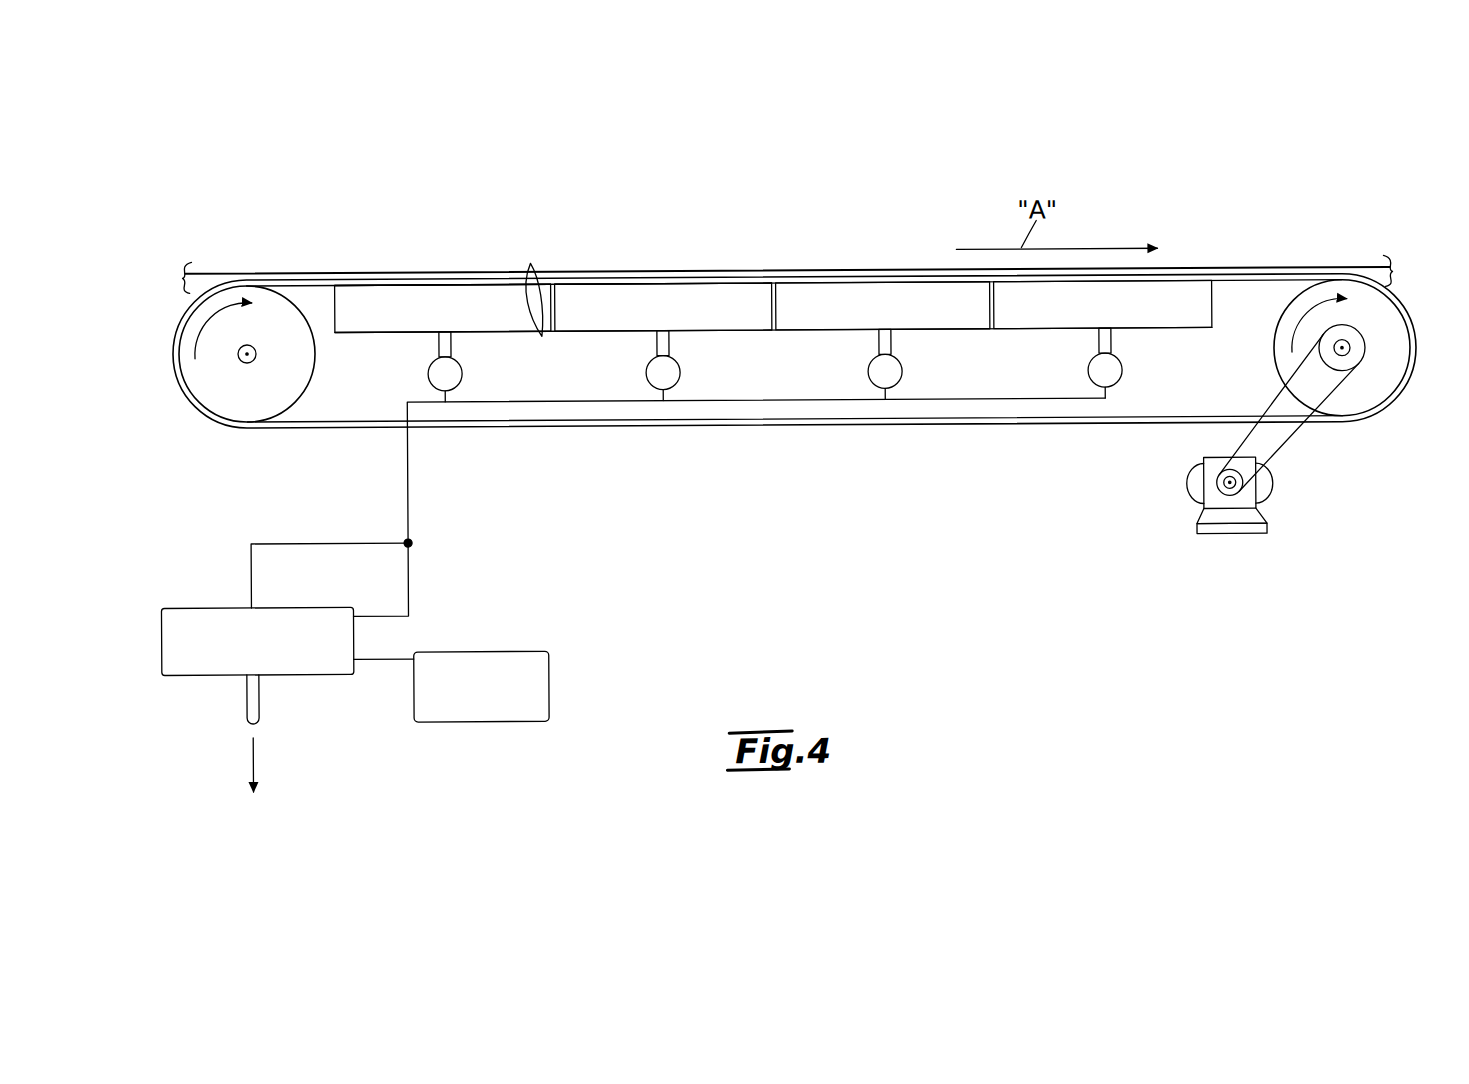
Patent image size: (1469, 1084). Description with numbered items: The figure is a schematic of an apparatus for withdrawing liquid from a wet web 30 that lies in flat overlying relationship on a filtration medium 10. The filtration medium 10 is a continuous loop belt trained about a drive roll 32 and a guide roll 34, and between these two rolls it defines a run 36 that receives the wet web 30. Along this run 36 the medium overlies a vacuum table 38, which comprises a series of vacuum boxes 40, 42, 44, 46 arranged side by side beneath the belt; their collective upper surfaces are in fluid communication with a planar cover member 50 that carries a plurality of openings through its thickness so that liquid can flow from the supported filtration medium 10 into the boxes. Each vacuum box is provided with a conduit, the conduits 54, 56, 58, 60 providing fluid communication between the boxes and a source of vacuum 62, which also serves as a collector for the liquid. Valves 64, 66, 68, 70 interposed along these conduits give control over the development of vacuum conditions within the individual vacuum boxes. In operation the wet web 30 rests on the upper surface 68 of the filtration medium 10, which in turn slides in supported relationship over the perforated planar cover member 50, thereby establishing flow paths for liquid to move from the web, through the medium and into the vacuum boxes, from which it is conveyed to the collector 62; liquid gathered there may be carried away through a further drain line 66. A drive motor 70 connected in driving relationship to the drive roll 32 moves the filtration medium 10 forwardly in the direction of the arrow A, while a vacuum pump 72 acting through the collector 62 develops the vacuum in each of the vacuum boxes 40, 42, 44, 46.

The filtration medium 10 is at (427, 287).
The wet web 30 is at (497, 275).
The drive roll 32 is at (1382, 381).
The guide roll 34 is at (202, 372).
The run 36 is at (787, 270).
The vacuum table 38 is at (984, 338).
The first vacuum chamber 40 is at (502, 320).
The vacuum box 42 is at (741, 320).
The vacuum box 44 is at (972, 321).
The vacuum box 46 is at (1171, 322).
The planar cover member 50 is at (646, 287).
The conduit 54 is at (452, 341).
The conduit 56 is at (670, 341).
The conduit 58 is at (892, 342).
The conduit 60 is at (1112, 342).
The vacuum source 62 is at (168, 623).
The valve 64 is at (462, 375).
The valve 66 is at (680, 375).
The valve 68 is at (902, 375).
The valve 70 is at (1267, 501).
The vacuum pump 72 is at (455, 653).